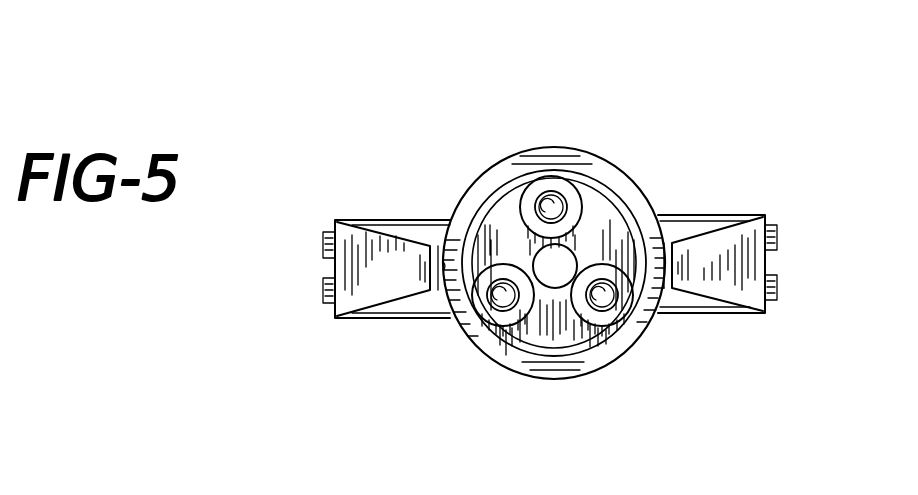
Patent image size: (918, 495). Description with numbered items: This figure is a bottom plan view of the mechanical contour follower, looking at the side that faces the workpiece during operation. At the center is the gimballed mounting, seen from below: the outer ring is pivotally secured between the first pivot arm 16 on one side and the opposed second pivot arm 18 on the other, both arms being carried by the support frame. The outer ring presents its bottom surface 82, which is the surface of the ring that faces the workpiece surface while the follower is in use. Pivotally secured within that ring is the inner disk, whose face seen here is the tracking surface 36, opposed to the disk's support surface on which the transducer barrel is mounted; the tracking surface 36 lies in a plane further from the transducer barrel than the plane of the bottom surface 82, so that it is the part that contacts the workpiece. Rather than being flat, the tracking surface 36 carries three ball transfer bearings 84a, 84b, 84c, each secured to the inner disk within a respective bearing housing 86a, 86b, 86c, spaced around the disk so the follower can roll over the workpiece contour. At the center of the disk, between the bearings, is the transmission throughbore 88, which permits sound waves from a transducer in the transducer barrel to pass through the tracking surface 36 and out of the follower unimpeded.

The first pivot arm 16 is at (347, 258).
The second pivot arm 18 is at (748, 270).
The tracking surface 36 is at (605, 242).
The bottom surface 82 is at (612, 196).
The ball transfer bearing 84a is at (489, 303).
The ball transfer bearing 84b is at (565, 196).
The ball transfer bearing 84c is at (602, 311).
The bearing housing 86a is at (496, 325).
The bearing housing 86b is at (525, 193).
The bearing housing 86c is at (623, 316).
The transmission throughbore 88 is at (538, 261).